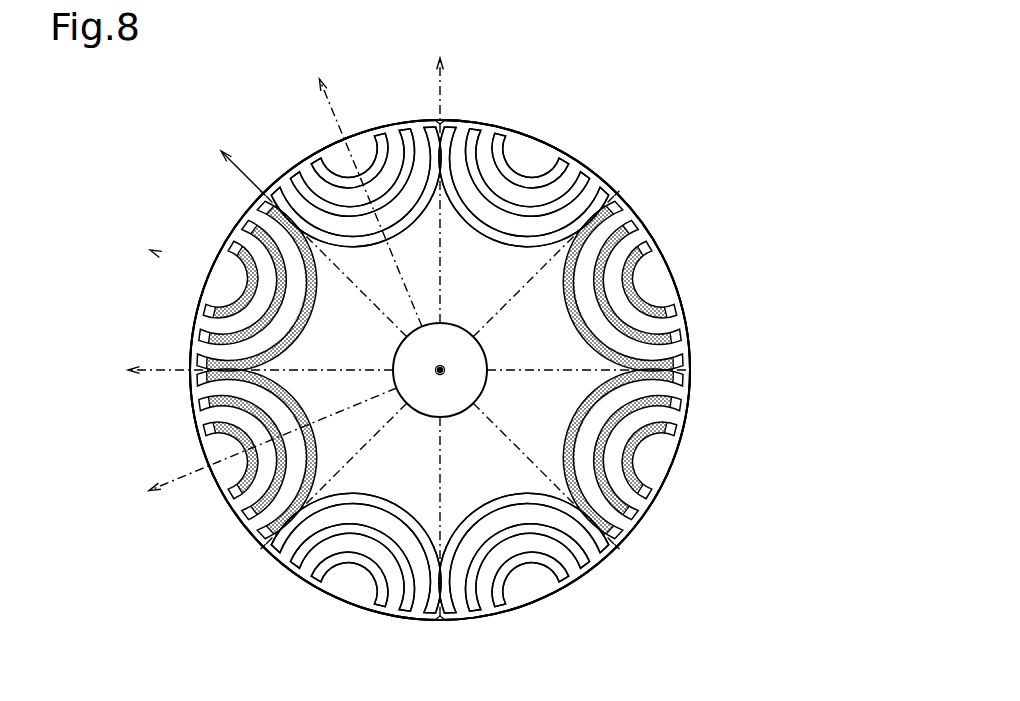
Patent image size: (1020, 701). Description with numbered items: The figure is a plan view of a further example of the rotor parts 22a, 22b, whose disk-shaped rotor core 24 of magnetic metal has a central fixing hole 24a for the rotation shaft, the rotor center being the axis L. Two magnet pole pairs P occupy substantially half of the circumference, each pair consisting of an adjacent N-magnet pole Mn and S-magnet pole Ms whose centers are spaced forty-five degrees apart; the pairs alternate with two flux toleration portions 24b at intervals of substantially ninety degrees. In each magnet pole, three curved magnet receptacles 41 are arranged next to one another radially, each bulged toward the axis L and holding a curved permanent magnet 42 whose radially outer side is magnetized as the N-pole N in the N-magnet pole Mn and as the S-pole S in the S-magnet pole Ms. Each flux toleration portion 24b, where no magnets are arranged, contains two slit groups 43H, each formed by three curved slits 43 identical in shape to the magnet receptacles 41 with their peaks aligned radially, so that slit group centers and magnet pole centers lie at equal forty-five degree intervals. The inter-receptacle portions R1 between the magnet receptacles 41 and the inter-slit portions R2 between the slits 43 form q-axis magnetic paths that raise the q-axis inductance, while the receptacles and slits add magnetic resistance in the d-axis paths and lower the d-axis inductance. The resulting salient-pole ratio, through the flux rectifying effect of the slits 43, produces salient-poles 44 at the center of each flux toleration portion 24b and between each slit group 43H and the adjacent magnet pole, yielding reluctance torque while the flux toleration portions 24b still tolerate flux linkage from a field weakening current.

The rotor part 22a is at (690, 158).
The rotor part 22b is at (440, 370).
The rotor core 24 is at (565, 163).
The fixing hole 24a is at (413, 408).
The flux toleration portion 24b is at (430, 118).
The magnet receptacle 41 is at (650, 252).
The permanent magnet 42 is at (672, 302).
The slit 43 is at (480, 513).
The slit group 43H is at (362, 160).
The salient-pole 44 is at (441, 119).
The axis L is at (441, 373).
The inter-receptacle portion R1 is at (293, 295).
The inter-slit portion R2 is at (365, 210).
The N-magnet pole Mn is at (190, 300).
The S-magnet pole Ms is at (193, 447).
The magnet pole pair P is at (100, 308).
The N-pole N is at (443, 368).
The S-pole S is at (442, 379).
The element q-axis is at (203, 153).
The element d-axis is at (100, 242).